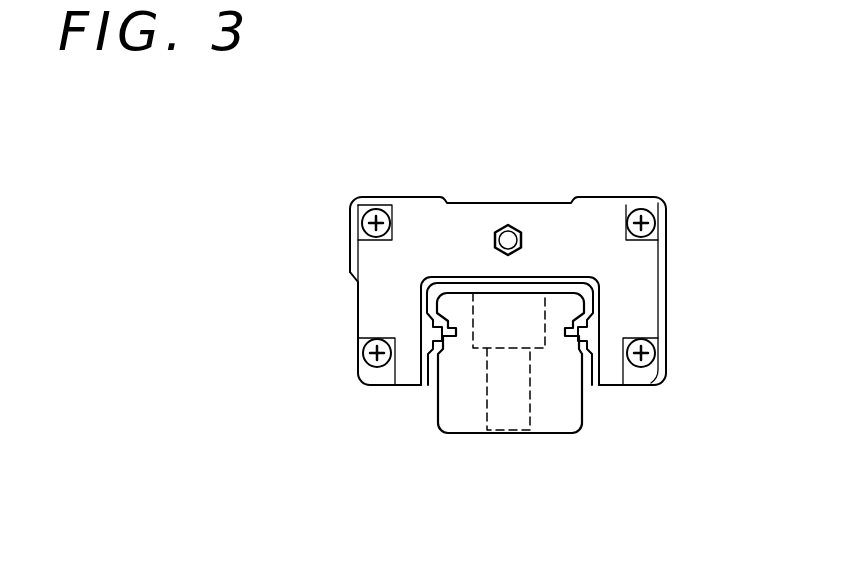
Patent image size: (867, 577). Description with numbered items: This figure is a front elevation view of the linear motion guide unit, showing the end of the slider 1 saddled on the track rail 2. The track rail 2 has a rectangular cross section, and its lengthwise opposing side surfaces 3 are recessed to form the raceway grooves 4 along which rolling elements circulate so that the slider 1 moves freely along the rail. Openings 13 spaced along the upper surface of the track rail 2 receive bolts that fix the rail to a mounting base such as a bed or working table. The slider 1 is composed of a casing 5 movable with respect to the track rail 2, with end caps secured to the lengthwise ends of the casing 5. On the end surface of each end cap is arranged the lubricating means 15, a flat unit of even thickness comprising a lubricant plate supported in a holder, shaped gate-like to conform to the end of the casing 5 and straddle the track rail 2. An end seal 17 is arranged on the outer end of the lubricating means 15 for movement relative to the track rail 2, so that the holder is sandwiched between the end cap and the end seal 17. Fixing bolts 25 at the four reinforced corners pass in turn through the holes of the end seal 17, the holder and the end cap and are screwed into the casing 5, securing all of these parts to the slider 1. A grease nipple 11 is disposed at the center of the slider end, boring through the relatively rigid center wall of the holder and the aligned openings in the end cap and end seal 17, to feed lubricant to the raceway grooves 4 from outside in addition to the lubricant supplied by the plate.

The slider 1 is at (533, 183).
The track rail 2 is at (462, 405).
The lengthwise side surfaces 3 is at (580, 390).
The raceway grooves 4 is at (585, 338).
The casing 5 is at (660, 230).
The grease nipple 11 is at (508, 226).
The openings 13 is at (527, 383).
The lubricating means 15 is at (455, 203).
The end seal 17 is at (625, 263).
The fixing bolts 25 is at (366, 207).